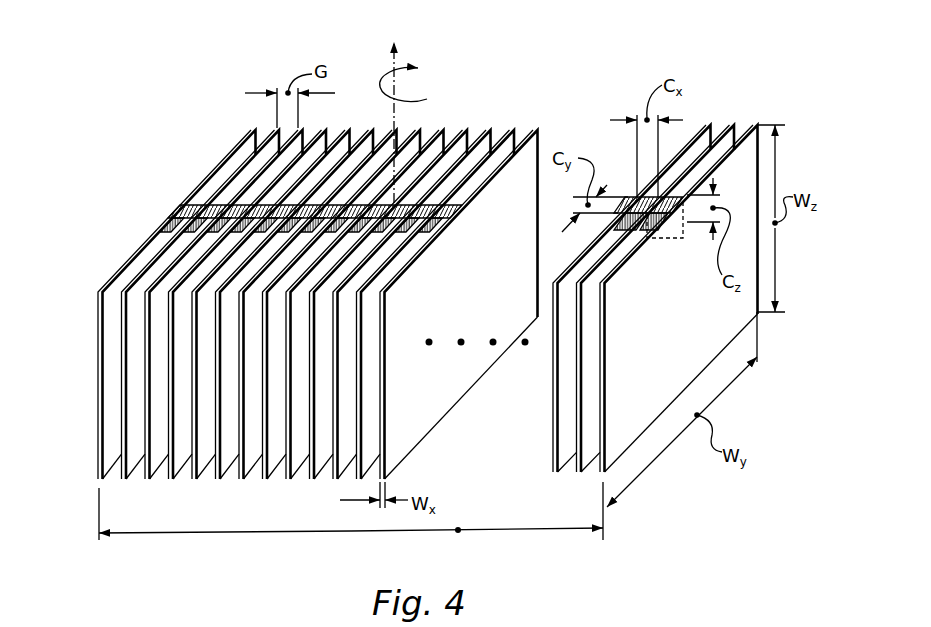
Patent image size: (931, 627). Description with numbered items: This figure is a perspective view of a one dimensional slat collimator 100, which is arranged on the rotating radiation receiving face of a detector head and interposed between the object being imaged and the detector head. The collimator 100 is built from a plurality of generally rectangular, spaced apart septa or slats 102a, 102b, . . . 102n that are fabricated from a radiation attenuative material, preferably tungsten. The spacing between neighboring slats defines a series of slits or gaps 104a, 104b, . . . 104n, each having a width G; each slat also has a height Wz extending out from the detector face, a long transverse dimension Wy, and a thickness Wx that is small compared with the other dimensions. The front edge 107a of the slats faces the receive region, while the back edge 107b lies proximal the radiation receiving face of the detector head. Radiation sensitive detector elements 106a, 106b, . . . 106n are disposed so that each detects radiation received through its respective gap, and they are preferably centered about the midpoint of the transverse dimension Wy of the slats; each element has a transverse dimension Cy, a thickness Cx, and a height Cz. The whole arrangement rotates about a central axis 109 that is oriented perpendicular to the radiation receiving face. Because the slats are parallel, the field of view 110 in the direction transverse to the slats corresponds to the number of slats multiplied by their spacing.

The one dimensional slat collimator 100 is at (665, 270).
The septum or slat 102a is at (100, 304).
The septum or slat 102b is at (121, 350).
The septum or slat 102n is at (683, 337).
The slit or gap 104a is at (118, 464).
The slit or gap 104b is at (142, 465).
The slit or gap 104n is at (597, 465).
The radiation sensitive detector element 106a is at (174, 207).
The radiation sensitive detector element 106b is at (221, 201).
The radiation sensitive detector element 106n is at (674, 197).
The front edge 107a is at (444, 437).
The back edge 107b is at (531, 118).
The central axis 109 is at (395, 112).
The field of view 110 is at (458, 531).